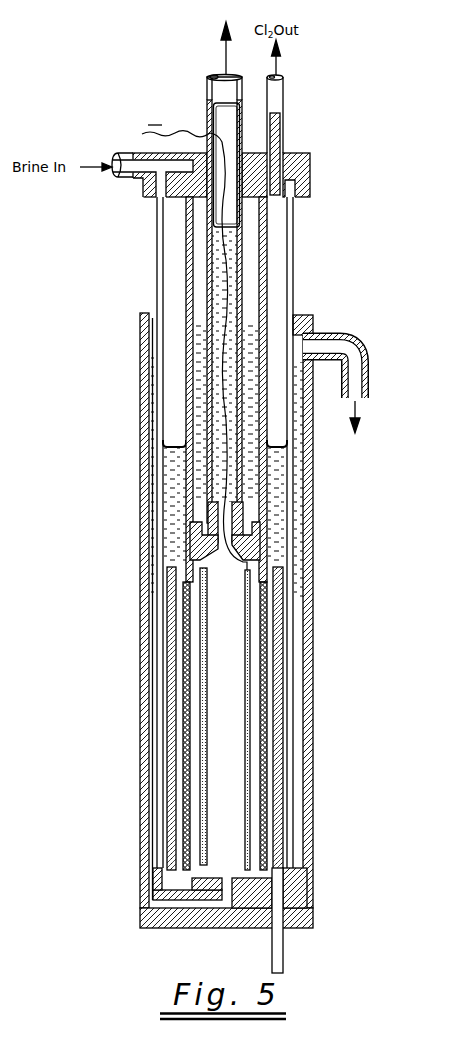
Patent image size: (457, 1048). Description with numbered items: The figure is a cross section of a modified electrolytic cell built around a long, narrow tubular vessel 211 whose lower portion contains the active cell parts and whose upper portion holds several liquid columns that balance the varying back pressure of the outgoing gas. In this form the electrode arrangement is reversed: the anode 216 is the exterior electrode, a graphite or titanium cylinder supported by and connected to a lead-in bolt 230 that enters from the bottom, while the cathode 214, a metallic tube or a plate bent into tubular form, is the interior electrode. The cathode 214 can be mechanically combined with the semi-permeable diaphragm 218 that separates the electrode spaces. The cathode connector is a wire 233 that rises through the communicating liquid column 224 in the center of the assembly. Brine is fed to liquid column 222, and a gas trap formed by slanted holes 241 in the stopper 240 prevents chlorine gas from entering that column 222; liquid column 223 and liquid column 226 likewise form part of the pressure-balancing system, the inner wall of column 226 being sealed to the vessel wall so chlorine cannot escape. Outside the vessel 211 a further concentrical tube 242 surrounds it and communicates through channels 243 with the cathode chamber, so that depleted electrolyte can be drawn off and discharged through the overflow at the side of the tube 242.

The vessel 211 is at (293, 576).
The cathode 214 is at (248, 658).
The anode 216 is at (280, 680).
The semi-permeable diaphragm 218 is at (267, 734).
The liquid column 222 is at (200, 337).
The liquid column 223 is at (148, 372).
The communicating liquid column 224 is at (218, 253).
The liquid column 226 is at (172, 488).
The lead-in bolt 230 is at (277, 940).
The wire 233 is at (177, 133).
The stopper 240 is at (192, 543).
The slanted holes 241 is at (258, 527).
The concentrical tube 242 is at (308, 846).
The channels 243 is at (182, 903).